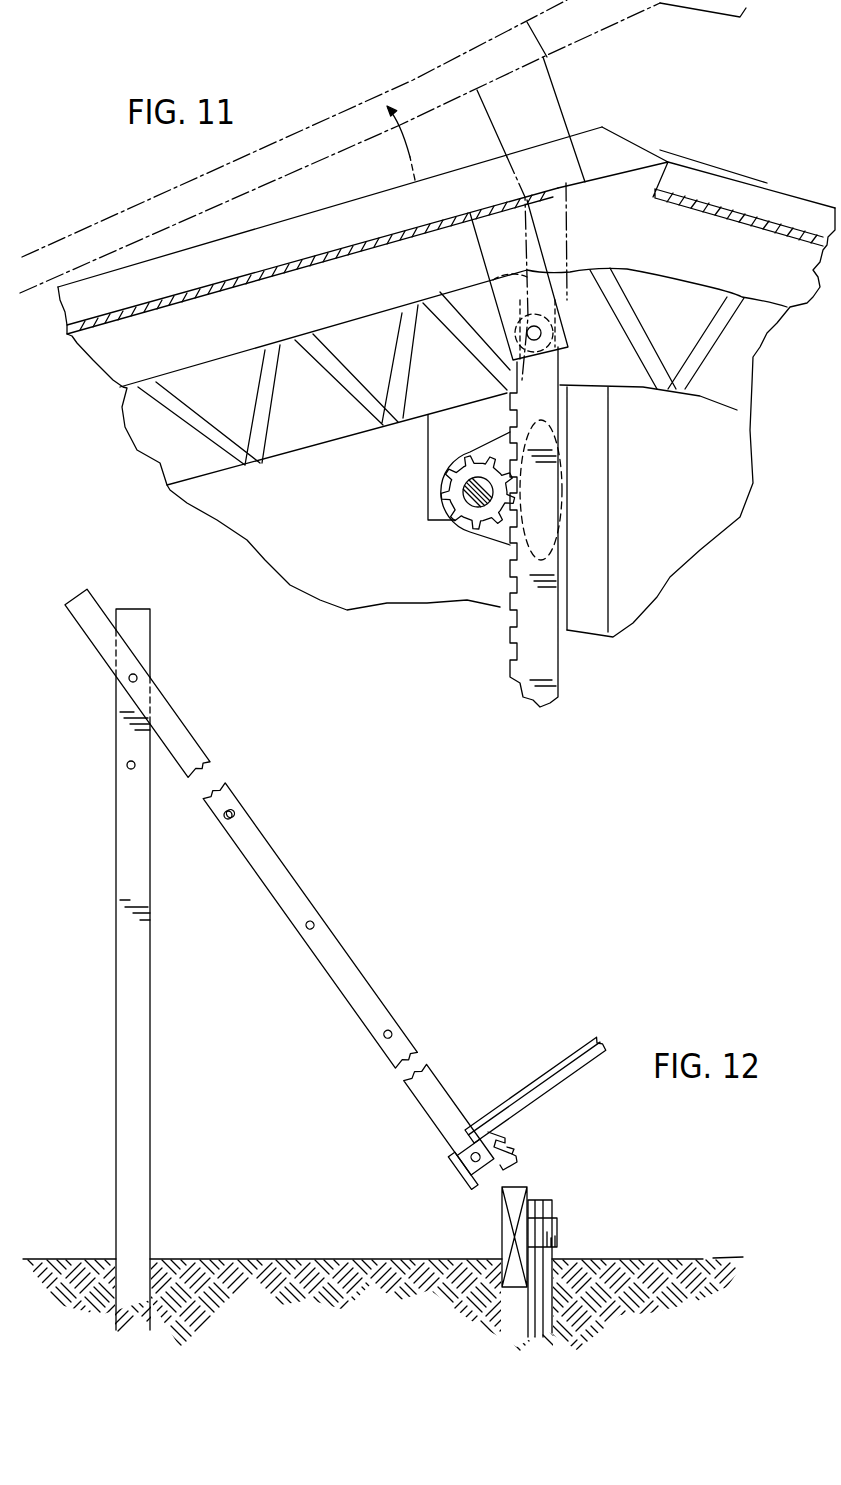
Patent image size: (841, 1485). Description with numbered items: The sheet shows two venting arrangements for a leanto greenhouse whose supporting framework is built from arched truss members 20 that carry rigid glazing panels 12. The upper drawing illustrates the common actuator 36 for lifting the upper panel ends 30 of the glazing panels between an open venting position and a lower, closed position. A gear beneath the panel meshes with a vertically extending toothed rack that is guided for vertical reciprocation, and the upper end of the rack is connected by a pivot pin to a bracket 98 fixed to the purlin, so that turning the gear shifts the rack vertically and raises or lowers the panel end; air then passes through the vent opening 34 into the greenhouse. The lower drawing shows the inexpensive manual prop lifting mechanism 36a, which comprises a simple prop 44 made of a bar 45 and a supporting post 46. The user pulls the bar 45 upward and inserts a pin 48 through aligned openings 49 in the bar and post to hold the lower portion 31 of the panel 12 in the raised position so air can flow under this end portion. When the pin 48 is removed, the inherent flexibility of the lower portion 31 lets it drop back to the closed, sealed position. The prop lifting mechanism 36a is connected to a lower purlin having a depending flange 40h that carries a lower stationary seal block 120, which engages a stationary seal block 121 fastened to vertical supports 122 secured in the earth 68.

In FIG. 11, the upper panel end 30 is at (343, 112).
In FIG. 11, the vent opening 34 is at (587, 97).
In FIG. 11, the bracket 98 is at (493, 258).
In FIG. 11, the arched truss member 20 is at (313, 415).
In FIG. 11, the common actuator 36 is at (567, 492).
In FIG. 12, the prop lifting mechanism 36a is at (275, 889).
In FIG. 12, the prop 44 is at (234, 829).
In FIG. 12, the bar 45 is at (427, 1064).
In FIG. 12, the supporting post 46 is at (150, 1022).
In FIG. 12, the pin 48 is at (138, 675).
In FIG. 12, the aligned openings 49 is at (127, 765).
In FIG. 12, the glazing panel 12 is at (512, 1057).
In FIG. 12, the lower portion 31 is at (535, 1085).
In FIG. 12, the depending flange 40h is at (510, 1163).
In FIG. 12, the stationary seal block 120 is at (463, 1170).
In FIG. 12, the stationary seal block 121 is at (500, 1222).
In FIG. 12, the vertical supports 122 is at (540, 1200).
In FIG. 12, the earth 68 is at (617, 1258).